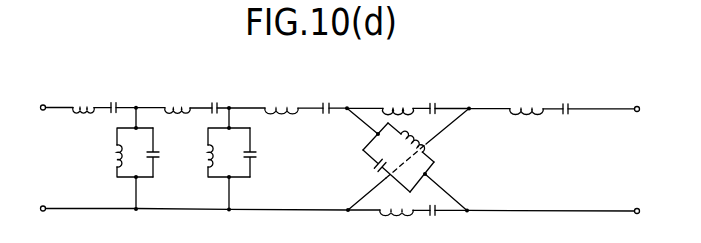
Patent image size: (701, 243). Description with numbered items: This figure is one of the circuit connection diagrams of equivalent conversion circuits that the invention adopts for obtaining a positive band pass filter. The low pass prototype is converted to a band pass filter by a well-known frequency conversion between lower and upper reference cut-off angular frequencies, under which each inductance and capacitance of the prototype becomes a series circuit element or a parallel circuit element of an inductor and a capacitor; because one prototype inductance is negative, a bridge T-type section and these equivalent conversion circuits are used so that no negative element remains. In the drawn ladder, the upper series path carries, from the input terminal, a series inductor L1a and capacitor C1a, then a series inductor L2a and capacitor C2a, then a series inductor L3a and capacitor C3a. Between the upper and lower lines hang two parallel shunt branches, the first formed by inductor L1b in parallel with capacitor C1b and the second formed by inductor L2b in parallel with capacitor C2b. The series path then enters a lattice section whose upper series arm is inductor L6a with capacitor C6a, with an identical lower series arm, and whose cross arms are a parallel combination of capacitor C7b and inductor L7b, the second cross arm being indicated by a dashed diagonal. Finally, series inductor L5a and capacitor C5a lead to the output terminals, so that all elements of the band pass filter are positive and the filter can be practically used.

The series inductor L1a is at (82, 96).
The series capacitor C1a is at (124, 96).
The series inductor L2a is at (178, 96).
The series capacitor C2a is at (225, 96).
The series inductor L'3a L3a is at (278, 79).
The series capacitor C'3a C3a is at (328, 79).
The series inductor L6a is at (397, 98).
The series capacitor C6a is at (444, 96).
The series inductor L'5a L5a is at (518, 79).
The series capacitor C'5a C5a is at (568, 77).
The shunt inductor L1b is at (95, 156).
The shunt capacitor C1b is at (170, 152).
The shunt inductor L2b is at (190, 144).
The shunt capacitor C2b is at (271, 152).
The lattice arm capacitor C7b is at (371, 171).
The lattice arm inductor L7b is at (429, 142).